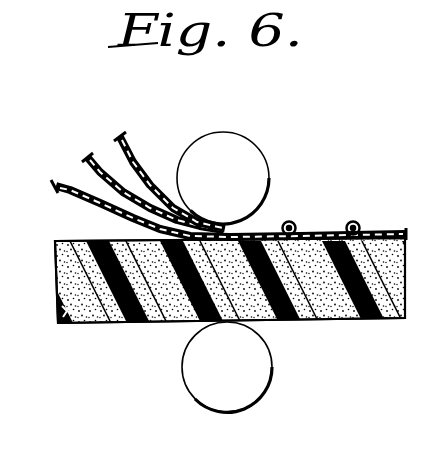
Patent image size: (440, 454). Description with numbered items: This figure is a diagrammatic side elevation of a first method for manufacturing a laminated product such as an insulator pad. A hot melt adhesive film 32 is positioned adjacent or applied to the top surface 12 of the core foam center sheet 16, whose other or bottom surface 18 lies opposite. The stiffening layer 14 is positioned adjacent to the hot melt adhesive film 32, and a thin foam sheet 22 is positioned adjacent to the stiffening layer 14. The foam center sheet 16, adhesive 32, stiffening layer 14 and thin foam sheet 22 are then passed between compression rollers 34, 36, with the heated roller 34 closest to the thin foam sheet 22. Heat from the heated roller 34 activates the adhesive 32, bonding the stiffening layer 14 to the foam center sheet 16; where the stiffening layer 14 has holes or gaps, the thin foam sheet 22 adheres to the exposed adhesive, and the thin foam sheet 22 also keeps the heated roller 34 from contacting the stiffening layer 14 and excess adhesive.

The top surface 12 is at (73, 243).
The stiffening layer 14 is at (91, 153).
The core foam center sheet 16 is at (70, 321).
The bottom surface 18 is at (115, 322).
The thin foam sheet 22 is at (147, 121).
The hot melt adhesive film 32 is at (69, 189).
The heated roller 34 is at (243, 168).
The compression roller 36 is at (255, 382).